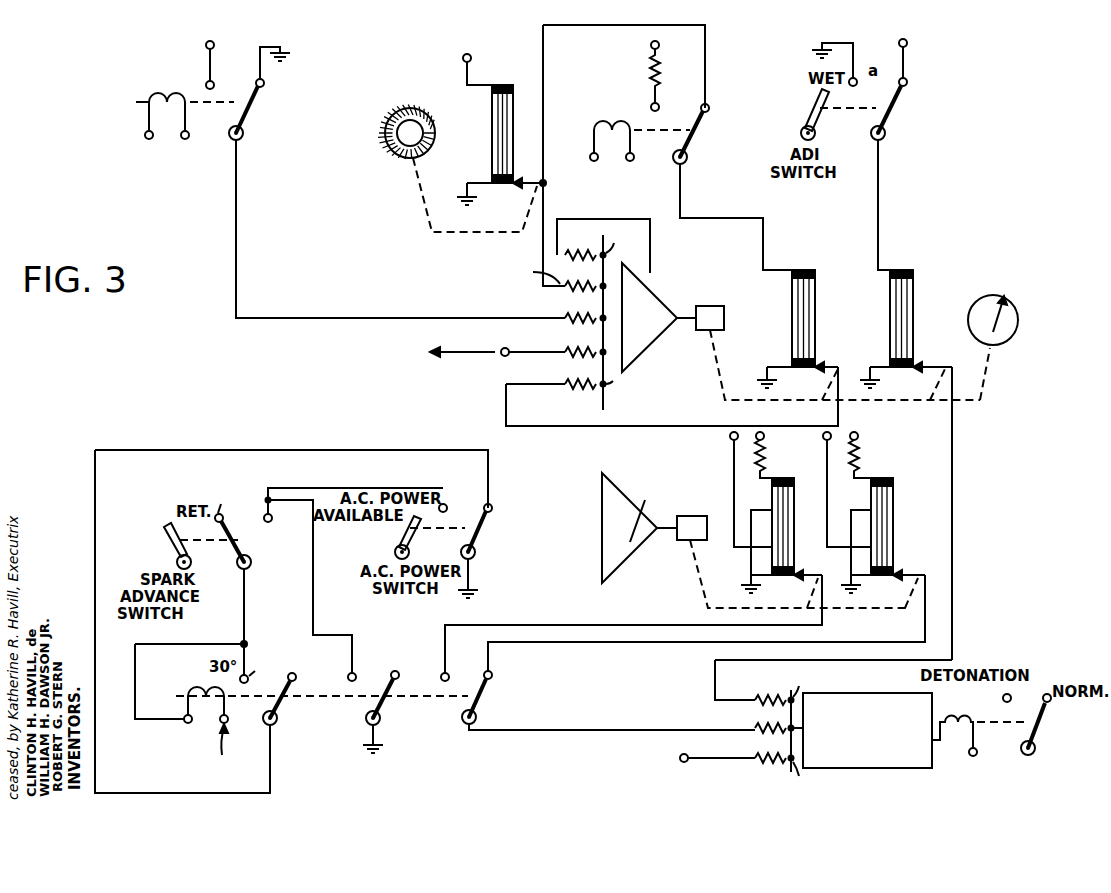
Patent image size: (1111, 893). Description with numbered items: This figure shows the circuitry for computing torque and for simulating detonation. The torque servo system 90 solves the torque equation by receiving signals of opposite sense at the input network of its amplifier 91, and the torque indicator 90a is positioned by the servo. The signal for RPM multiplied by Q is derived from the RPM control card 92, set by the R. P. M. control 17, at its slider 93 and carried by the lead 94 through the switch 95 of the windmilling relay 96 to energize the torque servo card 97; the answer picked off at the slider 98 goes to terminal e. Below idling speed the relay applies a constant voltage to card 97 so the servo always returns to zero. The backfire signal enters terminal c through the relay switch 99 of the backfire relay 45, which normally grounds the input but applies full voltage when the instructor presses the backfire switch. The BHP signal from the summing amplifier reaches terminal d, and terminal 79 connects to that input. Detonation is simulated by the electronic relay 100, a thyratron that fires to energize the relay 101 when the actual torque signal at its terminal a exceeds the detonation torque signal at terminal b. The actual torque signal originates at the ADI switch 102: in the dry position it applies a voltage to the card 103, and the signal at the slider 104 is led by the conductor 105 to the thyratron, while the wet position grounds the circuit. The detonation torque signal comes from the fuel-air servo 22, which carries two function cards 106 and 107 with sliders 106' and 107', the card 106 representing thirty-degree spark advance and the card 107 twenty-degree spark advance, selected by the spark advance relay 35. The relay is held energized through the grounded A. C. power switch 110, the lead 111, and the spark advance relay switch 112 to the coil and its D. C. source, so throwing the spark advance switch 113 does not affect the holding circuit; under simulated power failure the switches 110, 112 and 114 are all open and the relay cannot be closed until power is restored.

The R. P. M. control 17 is at (402, 112).
The fuel-air servo 22 is at (700, 494).
The spark advance relay 35 is at (196, 690).
The backfire relay 45 is at (136, 102).
The BHP signal terminal 79 is at (503, 357).
The torque servo system 90 is at (728, 284).
The torque indicator 90a is at (1000, 347).
The amplifier 91 is at (651, 287).
The RPM control card 92 is at (492, 116).
The slider 93 is at (518, 180).
The lead 94 is at (556, 28).
The switch 95 is at (690, 162).
The windmilling relay 96 is at (594, 126).
The torque servo card 97 is at (809, 318).
The slider 98 is at (820, 366).
The relay switch 99 is at (243, 122).
The electronic relay 100 is at (864, 697).
The relay 101 is at (950, 719).
The ADI switch 102 is at (884, 127).
The card 103 is at (907, 318).
The slider 104 is at (918, 366).
The conductor 105 is at (952, 561).
The function card 106 is at (683, 579).
The potentiometer wiper 106' is at (797, 565).
The function card 107 is at (866, 511).
The potentiometer wiper 107' is at (896, 565).
The A. C. power switch 110 is at (478, 548).
The lead 111 is at (95, 482).
The spark advance relay switch 112 is at (279, 712).
The spark advance switch 113 is at (238, 548).
The switch 114 is at (380, 715).